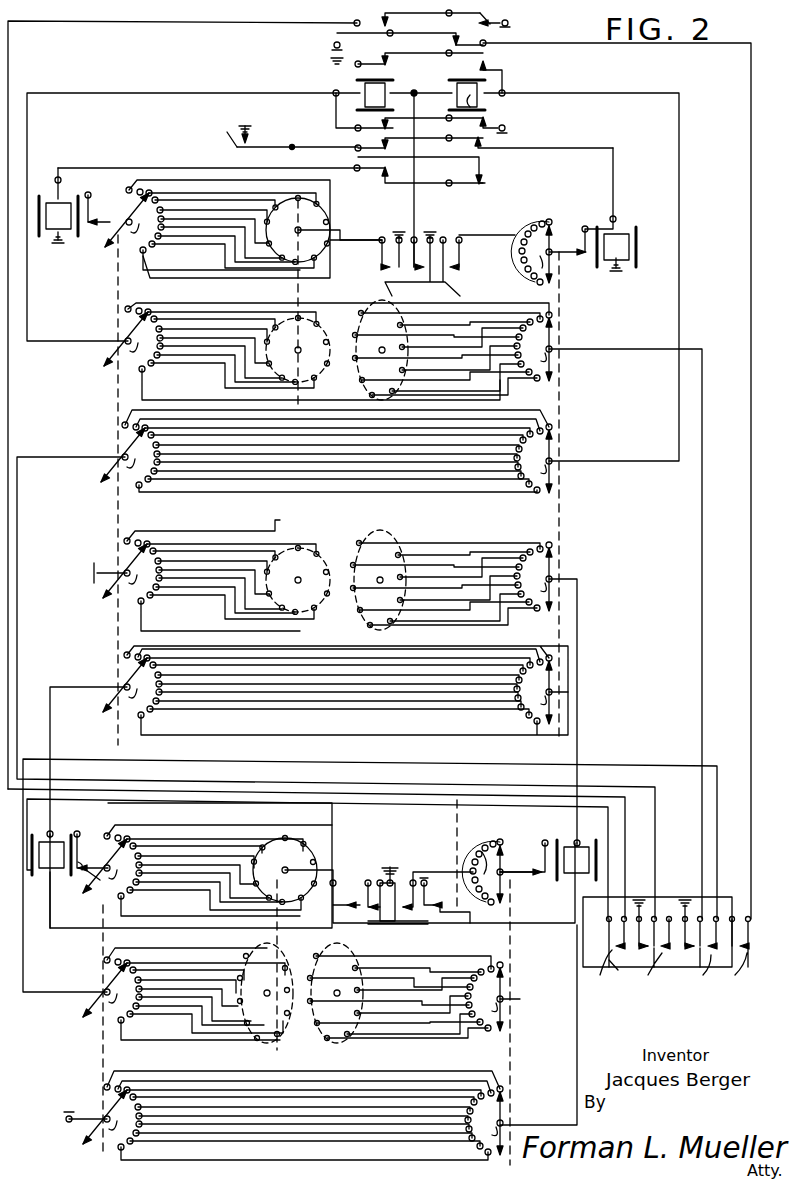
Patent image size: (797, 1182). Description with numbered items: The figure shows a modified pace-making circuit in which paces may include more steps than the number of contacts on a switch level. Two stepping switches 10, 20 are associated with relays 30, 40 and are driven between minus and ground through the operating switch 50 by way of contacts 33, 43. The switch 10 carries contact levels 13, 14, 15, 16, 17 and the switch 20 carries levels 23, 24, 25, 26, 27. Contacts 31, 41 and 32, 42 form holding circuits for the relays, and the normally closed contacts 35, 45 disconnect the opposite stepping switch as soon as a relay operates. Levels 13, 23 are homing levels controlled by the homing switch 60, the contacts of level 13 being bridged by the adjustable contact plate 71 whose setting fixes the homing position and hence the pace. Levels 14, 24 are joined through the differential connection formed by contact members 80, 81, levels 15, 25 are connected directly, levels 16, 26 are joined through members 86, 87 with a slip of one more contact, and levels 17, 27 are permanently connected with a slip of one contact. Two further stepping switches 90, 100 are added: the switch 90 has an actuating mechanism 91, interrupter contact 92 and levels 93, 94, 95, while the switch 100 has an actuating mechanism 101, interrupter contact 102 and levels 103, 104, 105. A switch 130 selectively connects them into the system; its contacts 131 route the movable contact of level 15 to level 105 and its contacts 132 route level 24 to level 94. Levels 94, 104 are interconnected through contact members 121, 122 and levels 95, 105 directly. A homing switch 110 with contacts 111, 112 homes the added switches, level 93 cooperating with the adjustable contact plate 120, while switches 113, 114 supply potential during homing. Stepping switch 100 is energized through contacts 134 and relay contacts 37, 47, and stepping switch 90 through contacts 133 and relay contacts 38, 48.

The stepping switch 10 is at (58, 192).
The contact level 13 is at (132, 210).
The contact level 14 is at (122, 376).
The contact level 15 is at (111, 474).
The contact level 16 is at (114, 560).
The contact level 17 is at (114, 680).
The stepping switch 20 is at (622, 230).
The contact level 23 is at (551, 233).
The contact level 24 is at (556, 370).
The contact level 25 is at (560, 484).
The contact level 26 is at (553, 567).
The contact level 27 is at (572, 686).
The relay 30 is at (486, 100).
The contacts 31 is at (490, 64).
The contacts 32 is at (503, 126).
The contacts 33 is at (486, 178).
The relay contact 35 is at (472, 144).
The contacts 37 is at (444, 45).
The contacts 38 is at (506, 21).
The relay 40 is at (358, 84).
The contacts 41 is at (388, 62).
The contacts 42 is at (385, 122).
The contacts 43 is at (366, 144).
The relay contacts 45 is at (380, 174).
The contacts 47 is at (336, 40).
The contacts 48 is at (364, 20).
The operating switch 50 is at (260, 148).
The homing switch 60 is at (448, 214).
The adjustable contact plate 71 is at (327, 222).
The contact member 80 is at (320, 328).
The contact member 81 is at (358, 368).
The contact member 86 is at (306, 554).
The contact member 87 is at (354, 600).
The stepping switch 90 is at (42, 832).
The actuating mechanism 91 is at (73, 832).
The interrupter contact 92 is at (94, 874).
The contact level 93 is at (108, 888).
The contact level 94 is at (106, 986).
The contact level 95 is at (108, 1102).
The stepping switch 100 is at (567, 838).
The actuating mechanism 101 is at (579, 844).
The interrupter contact 102 is at (540, 870).
The contact level 103 is at (504, 882).
The contact level 104 is at (504, 990).
The contact level 105 is at (505, 1124).
The homing switch 110 is at (394, 924).
The contacts 111 is at (374, 880).
The contacts 112 is at (410, 880).
The switch 113 is at (360, 899).
The switch 114 is at (438, 900).
The adjustable contact plate 120 is at (311, 858).
The contact member 121 is at (276, 972).
The contact member 122 is at (326, 1029).
The switch 130 is at (600, 978).
The contacts 131 is at (645, 977).
The contacts 132 is at (691, 977).
The contacts 133 is at (614, 946).
The contacts 134 is at (738, 977).